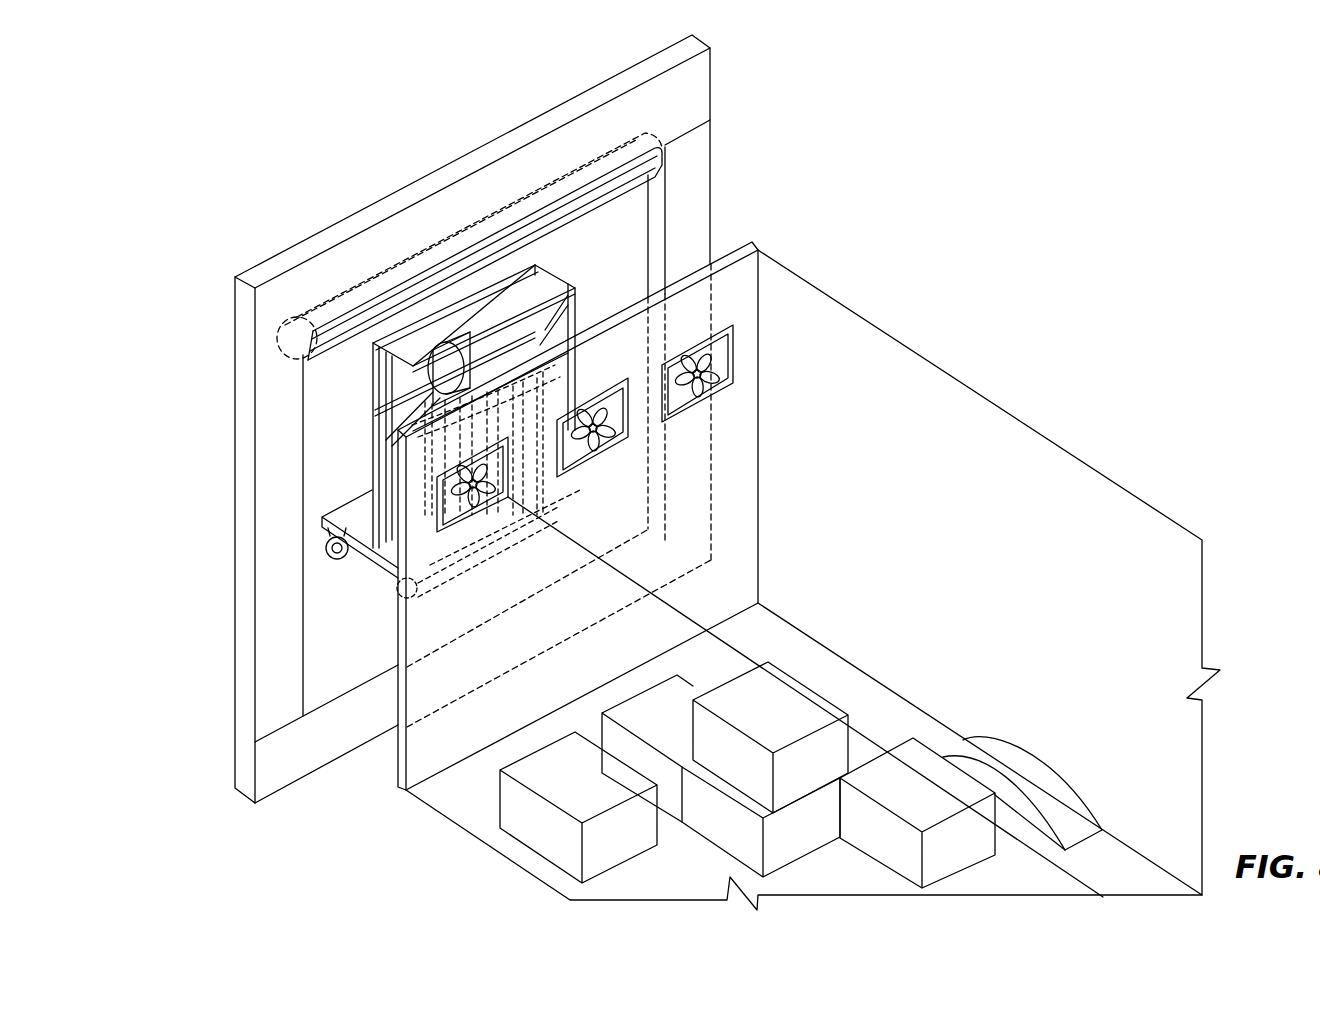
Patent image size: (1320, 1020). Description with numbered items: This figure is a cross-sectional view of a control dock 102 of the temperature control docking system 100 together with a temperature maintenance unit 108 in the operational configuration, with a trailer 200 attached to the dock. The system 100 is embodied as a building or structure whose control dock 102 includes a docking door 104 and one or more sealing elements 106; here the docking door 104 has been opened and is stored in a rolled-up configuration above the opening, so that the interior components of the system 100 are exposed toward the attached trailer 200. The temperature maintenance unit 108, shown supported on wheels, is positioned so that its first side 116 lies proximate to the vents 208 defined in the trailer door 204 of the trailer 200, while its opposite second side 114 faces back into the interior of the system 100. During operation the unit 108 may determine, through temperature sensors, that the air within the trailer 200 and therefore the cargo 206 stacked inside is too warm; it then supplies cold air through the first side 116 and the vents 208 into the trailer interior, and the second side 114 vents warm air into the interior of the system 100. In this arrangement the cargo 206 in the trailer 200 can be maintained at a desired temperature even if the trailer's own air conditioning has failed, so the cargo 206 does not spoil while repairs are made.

The temperature control docking system (TCDS) 100 is at (195, 115).
The control dock 102 is at (225, 273).
The docking door 104 is at (317, 343).
The sealing element 106 is at (697, 147).
The temperature maintenance unit 108 is at (587, 278).
The second side 114 is at (383, 377).
The first side 116 is at (433, 392).
The trailer 200 is at (1015, 405).
The trailer door 204 is at (687, 268).
The cargo 206 is at (757, 700).
The vents 208 is at (613, 453).